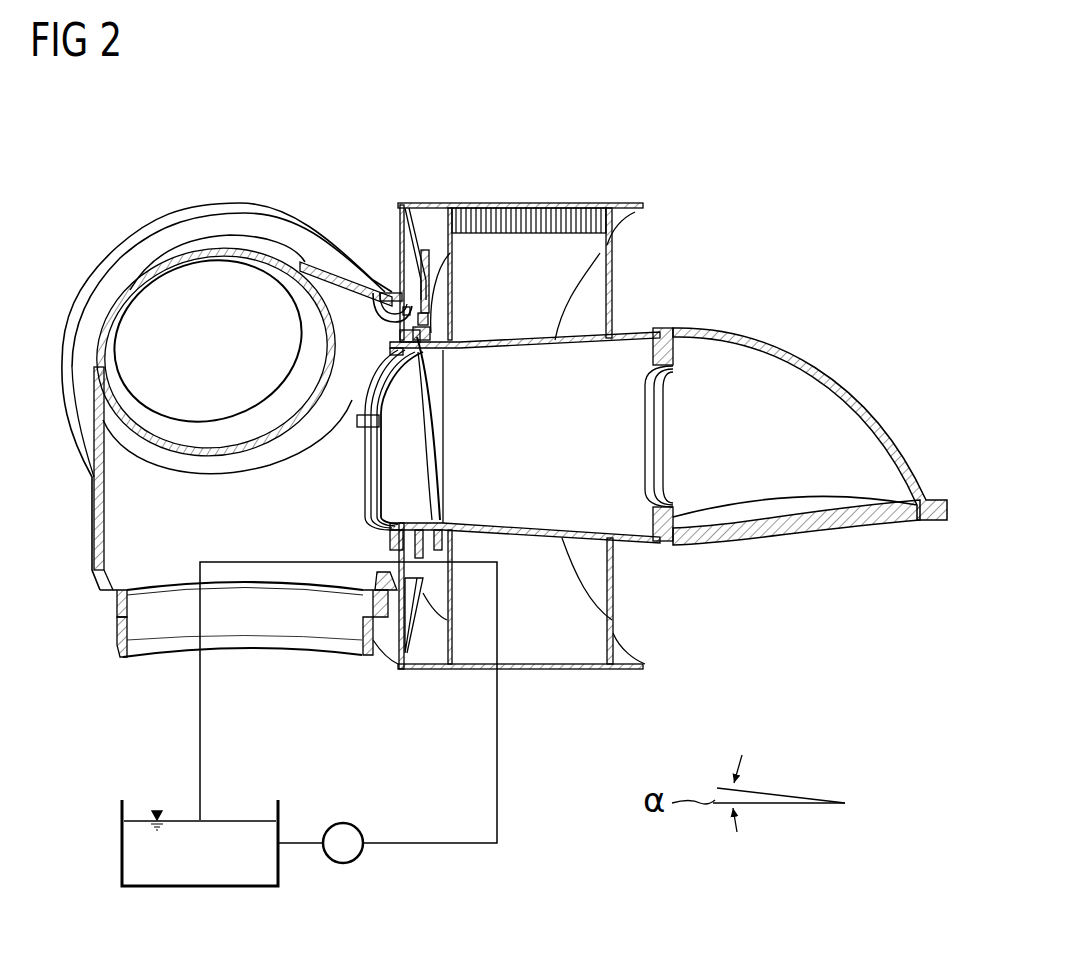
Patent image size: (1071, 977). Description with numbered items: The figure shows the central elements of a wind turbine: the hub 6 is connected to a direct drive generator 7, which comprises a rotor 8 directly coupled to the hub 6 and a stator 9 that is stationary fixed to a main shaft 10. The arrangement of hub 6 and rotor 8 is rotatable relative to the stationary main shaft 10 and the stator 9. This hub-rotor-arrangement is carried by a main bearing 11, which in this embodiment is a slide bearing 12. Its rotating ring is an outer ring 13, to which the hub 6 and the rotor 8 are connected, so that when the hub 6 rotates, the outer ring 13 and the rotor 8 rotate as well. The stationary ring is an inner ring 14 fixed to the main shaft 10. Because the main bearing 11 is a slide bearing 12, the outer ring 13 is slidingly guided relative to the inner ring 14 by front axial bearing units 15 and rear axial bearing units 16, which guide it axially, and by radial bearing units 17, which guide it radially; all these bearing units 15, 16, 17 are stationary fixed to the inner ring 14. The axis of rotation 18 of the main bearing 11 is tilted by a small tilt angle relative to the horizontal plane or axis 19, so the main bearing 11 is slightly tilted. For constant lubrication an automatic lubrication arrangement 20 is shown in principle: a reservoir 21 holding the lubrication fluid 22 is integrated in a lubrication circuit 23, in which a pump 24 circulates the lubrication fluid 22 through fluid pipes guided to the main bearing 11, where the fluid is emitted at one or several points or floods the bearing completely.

The hub 6 is at (174, 215).
The direct drive generator 7 is at (690, 191).
The rotor 8 is at (513, 203).
The stator 9 is at (603, 223).
The main shaft 10 is at (838, 372).
The main bearing 11 is at (437, 465).
The slide bearing 12 is at (412, 447).
The outer ring 13 is at (405, 292).
The inner ring 14 is at (403, 490).
The front axial bearing units 15 is at (398, 318).
The rear axial bearing units 16 is at (433, 310).
The radial bearing units 17 is at (415, 355).
The axis of rotation 18 is at (796, 790).
The horizontal plane or axis 19 is at (795, 812).
The automatic lubrication arrangement 20 is at (263, 764).
The reservoir 21 is at (230, 890).
The lubrication fluid 22 is at (155, 873).
The lubrication circuit 23 is at (432, 845).
The pump 24 is at (343, 865).